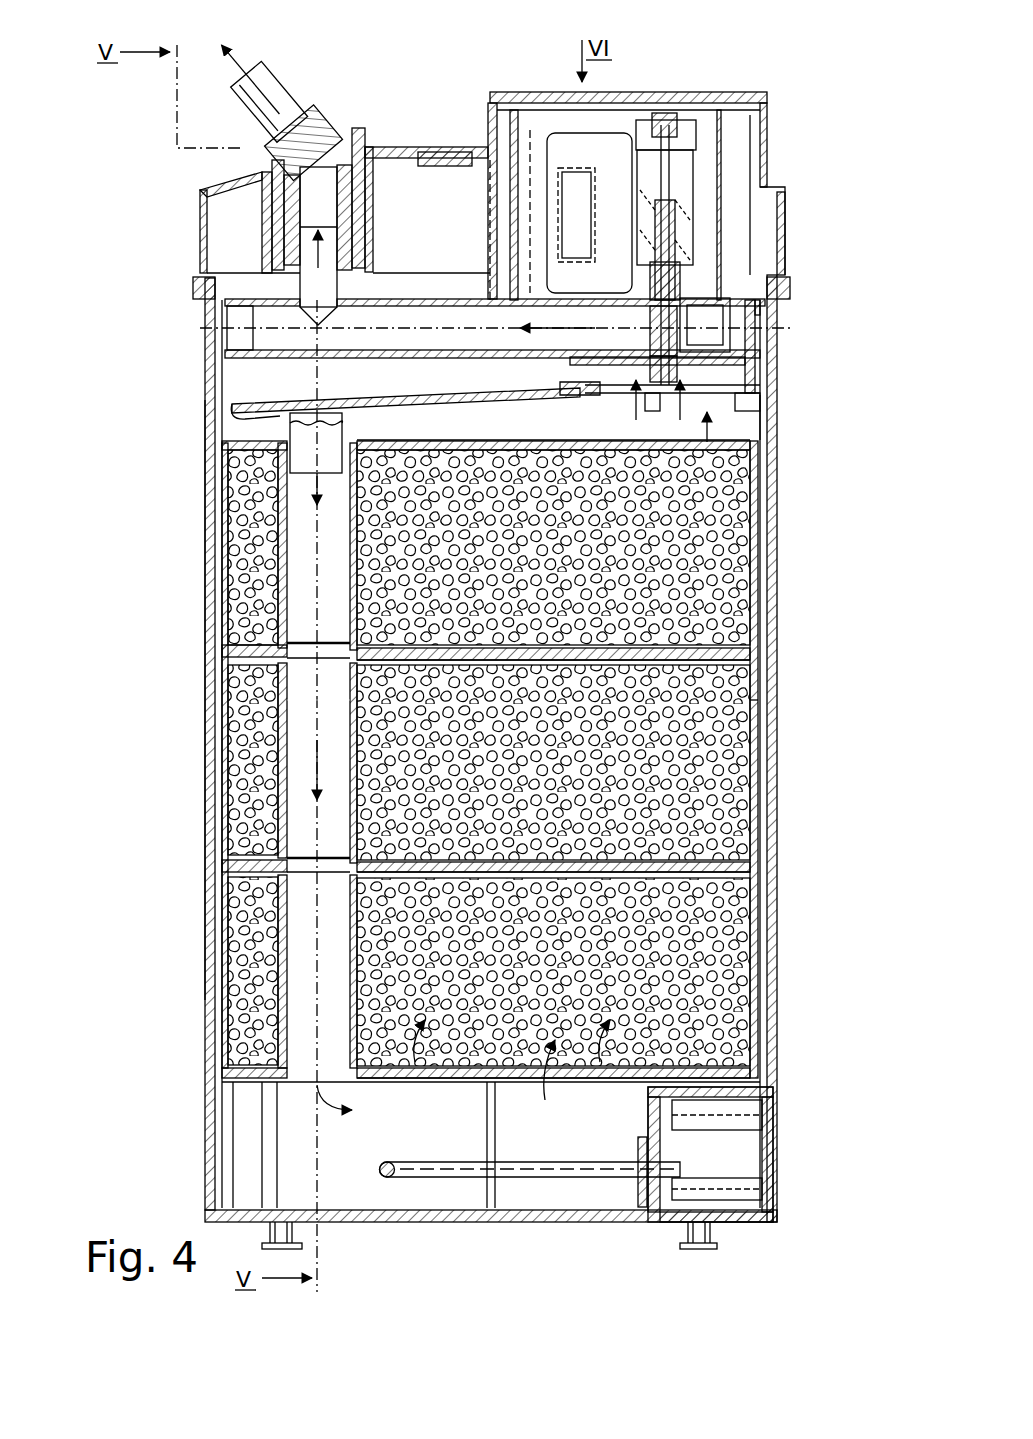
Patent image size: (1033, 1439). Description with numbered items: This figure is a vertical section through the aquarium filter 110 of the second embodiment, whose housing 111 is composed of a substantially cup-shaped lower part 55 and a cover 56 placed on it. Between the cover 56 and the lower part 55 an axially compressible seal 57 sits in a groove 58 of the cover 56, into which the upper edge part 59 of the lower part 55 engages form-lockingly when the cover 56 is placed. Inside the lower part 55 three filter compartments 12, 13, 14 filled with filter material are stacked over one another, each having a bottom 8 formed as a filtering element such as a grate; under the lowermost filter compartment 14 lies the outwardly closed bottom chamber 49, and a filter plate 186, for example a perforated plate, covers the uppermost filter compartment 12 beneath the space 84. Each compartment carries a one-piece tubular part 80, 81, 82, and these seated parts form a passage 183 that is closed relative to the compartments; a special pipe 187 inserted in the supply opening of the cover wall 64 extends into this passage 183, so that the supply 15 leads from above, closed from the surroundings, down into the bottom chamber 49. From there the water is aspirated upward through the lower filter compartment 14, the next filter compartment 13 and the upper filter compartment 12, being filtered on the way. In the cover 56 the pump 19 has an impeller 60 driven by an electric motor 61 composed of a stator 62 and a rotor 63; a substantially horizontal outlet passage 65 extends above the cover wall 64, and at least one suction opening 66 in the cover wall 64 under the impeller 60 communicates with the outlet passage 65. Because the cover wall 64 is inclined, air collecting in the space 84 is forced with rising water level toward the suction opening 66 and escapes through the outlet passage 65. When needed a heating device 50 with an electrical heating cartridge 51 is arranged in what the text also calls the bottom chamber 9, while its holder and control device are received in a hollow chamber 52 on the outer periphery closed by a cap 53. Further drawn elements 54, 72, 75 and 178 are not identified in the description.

The bottom 8 is at (757, 632).
The bottom chamber 9 is at (755, 652).
The filter compartment 12 is at (760, 600).
The filter compartment 13 is at (755, 770).
The filter compartment 14 is at (760, 945).
The supply 15 is at (300, 518).
The pump 19 is at (704, 140).
The bottom chamber 49 is at (382, 1185).
The heating device 50 is at (620, 1192).
The electrical heating cartridge 51 is at (570, 1172).
The hollow chamber 52 is at (745, 1160).
The cap 53 is at (772, 1110).
The lower seal ring 54 is at (772, 1192).
The lower part 55 is at (771, 560).
The cover 56 is at (785, 232).
The seal 57 is at (770, 290).
The groove 58 is at (205, 290).
The upper edge part 59 is at (780, 312).
The impeller 60 is at (700, 330).
The electric motor 61 is at (576, 124).
The stator 62 is at (610, 150).
The rotor 63 is at (680, 190).
The cover wall 64 is at (235, 406).
The outlet passage 65 is at (245, 340).
The suction opening 66 is at (745, 370).
The seal ring 72 is at (268, 262).
The outlet bore 75 is at (275, 230).
The tubular part 80 is at (255, 560).
The tubular part 81 is at (255, 780).
The tubular part 82 is at (255, 930).
The space 84 is at (536, 430).
The filter 110 is at (790, 528).
The housing 111 is at (765, 700).
The outlet connector 178 is at (352, 135).
The passage 183 is at (300, 696).
The filter plate 186 is at (775, 440).
The pipe 187 is at (290, 445).